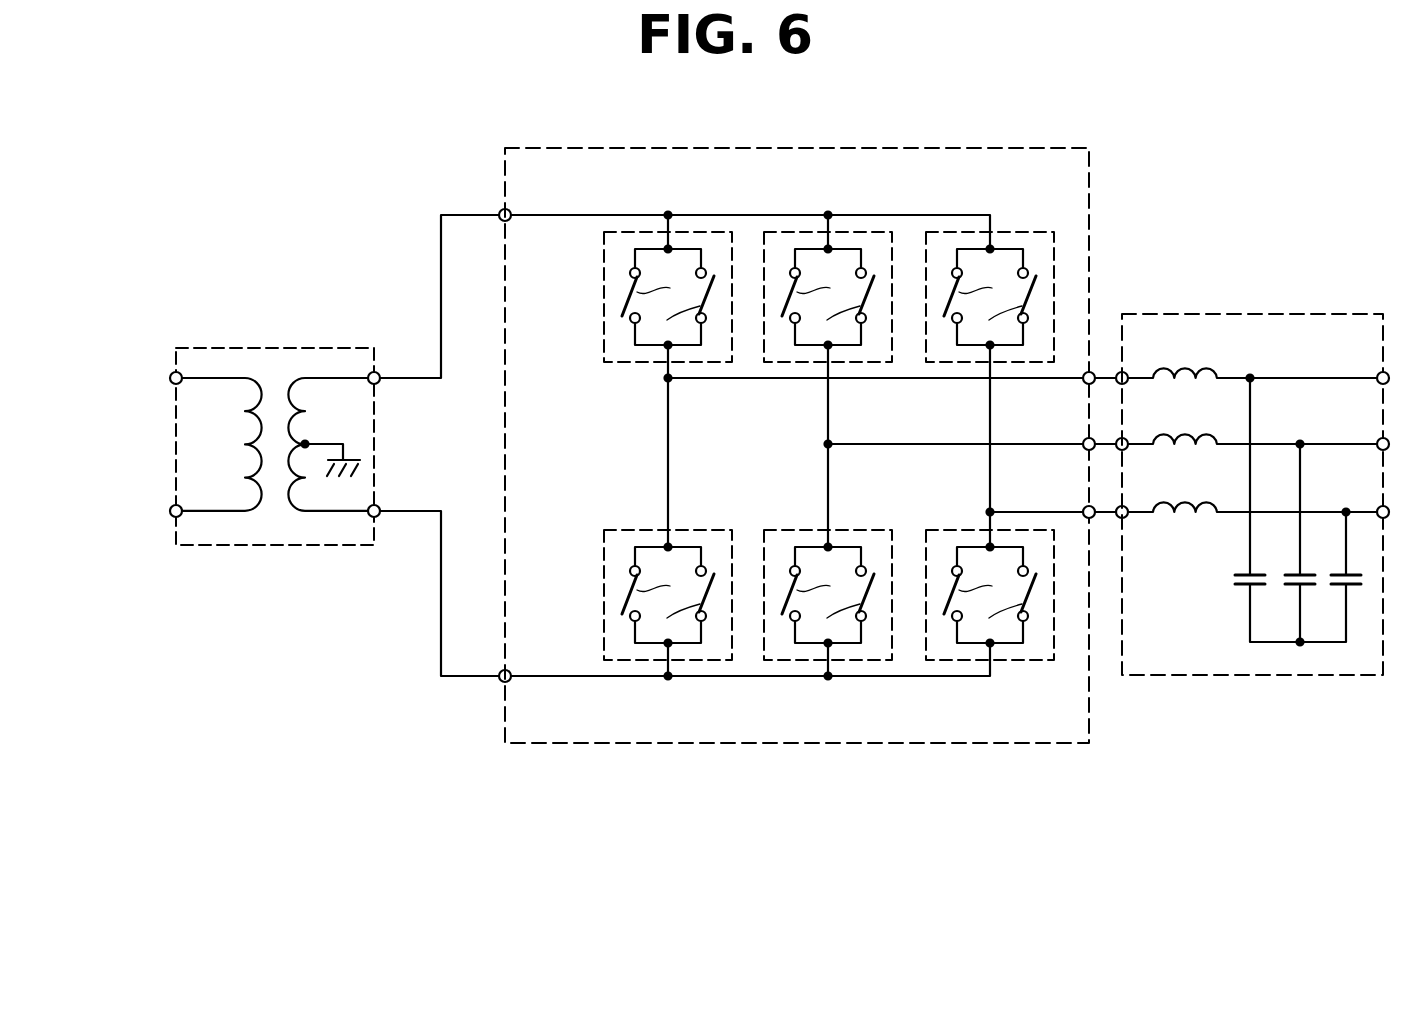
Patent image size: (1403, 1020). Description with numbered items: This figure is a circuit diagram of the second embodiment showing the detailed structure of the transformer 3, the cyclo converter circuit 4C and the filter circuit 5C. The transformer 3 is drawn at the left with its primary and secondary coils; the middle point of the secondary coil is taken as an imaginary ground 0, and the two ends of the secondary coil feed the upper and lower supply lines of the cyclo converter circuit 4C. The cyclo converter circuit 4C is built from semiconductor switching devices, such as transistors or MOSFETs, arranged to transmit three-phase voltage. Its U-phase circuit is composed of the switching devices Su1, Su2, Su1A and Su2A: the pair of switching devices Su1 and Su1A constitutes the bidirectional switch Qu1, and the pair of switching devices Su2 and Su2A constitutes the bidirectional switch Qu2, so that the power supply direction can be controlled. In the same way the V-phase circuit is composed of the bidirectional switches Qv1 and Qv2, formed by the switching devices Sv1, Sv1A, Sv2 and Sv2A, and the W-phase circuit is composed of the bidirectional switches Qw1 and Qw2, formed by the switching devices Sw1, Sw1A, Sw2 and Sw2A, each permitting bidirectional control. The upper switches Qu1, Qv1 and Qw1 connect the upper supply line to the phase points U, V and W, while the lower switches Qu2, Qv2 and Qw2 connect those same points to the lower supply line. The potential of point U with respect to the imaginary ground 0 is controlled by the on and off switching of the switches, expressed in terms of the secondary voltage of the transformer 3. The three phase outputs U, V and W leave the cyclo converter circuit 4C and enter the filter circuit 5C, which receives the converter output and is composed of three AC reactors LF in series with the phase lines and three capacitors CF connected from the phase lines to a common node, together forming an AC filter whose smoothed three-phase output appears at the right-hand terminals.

The transformer 3 is at (286, 348).
The imaginary ground 0 is at (331, 446).
The cyclo converter circuit 4C is at (1092, 150).
The filter circuit 5C is at (1283, 314).
The point U is at (884, 446).
The V phase V is at (964, 446).
The W phase W is at (1045, 446).
The bidirectional switch Qu1 is at (666, 274).
The bidirectional switch Qv1 is at (826, 274).
The bidirectional switch Qw1 is at (994, 281).
The bidirectional switch Qu2 is at (666, 580).
The bidirectional switch Qv2 is at (826, 580).
The bidirectional switch Qw2 is at (981, 579).
The semiconductor switching device Su1 is at (668, 275).
The semiconductor switching device Su1A is at (671, 328).
The semiconductor switching device Sv1 is at (828, 275).
The semiconductor switching device Sv1A is at (831, 328).
The semiconductor switching device Sw1 is at (990, 275).
The semiconductor switching device Sw1A is at (992, 328).
The semiconductor switching device Su2 is at (668, 573).
The semiconductor switching device Su2A is at (671, 626).
The semiconductor switching device Sv2 is at (828, 573).
The semiconductor switching device Sv2A is at (831, 626).
The semiconductor switching device Sw2 is at (990, 573).
The semiconductor switching device Sw2A is at (992, 626).
The AC reactor LF is at (1258, 426).
The capacitor CF is at (1288, 510).